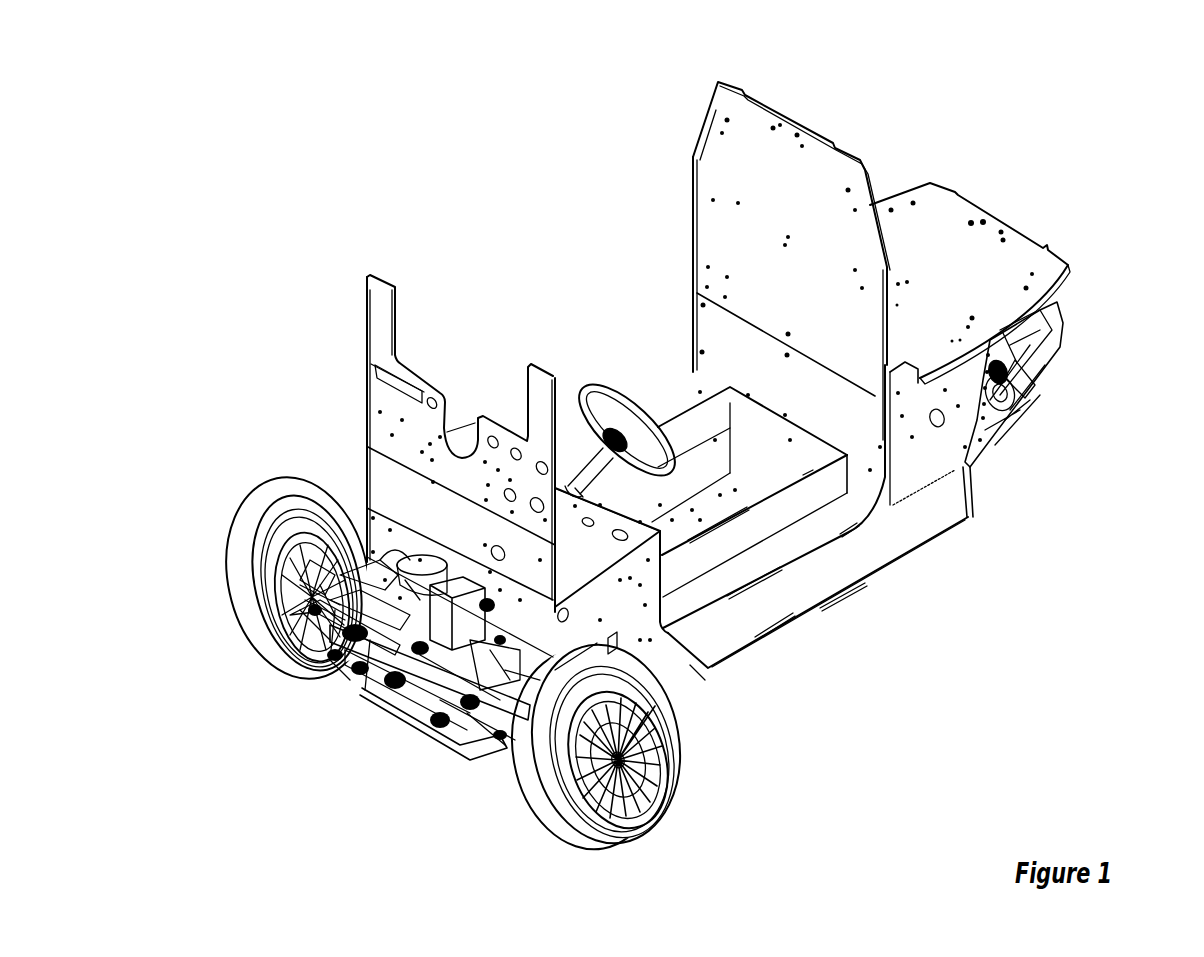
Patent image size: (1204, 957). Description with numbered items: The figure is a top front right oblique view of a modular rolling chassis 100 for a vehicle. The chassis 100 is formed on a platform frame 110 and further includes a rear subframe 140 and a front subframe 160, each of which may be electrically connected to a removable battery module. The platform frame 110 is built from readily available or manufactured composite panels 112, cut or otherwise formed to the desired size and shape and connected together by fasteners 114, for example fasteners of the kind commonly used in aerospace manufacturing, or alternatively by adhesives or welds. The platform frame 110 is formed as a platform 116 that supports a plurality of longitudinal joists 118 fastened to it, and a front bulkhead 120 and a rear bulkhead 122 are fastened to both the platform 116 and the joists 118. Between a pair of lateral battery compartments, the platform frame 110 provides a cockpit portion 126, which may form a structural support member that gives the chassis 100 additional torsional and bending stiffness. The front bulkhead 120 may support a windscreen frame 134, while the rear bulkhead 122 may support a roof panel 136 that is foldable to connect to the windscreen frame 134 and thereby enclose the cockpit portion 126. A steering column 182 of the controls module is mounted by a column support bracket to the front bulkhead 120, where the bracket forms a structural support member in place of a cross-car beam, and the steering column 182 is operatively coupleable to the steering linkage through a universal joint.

The rolling chassis 100 is at (347, 124).
The platform frame 110 is at (800, 643).
The composite panels 112 is at (797, 205).
The fasteners 114 is at (650, 638).
The platform 116 is at (838, 531).
The longitudinal joists 118 is at (931, 533).
The front bulkhead 120 is at (460, 405).
The rear bulkhead 122 is at (983, 198).
The cockpit portion 126 is at (703, 455).
The windscreen frame 134 is at (355, 283).
The roof panel 136 is at (693, 123).
The rear subframe 140 is at (1050, 390).
The front subframe 160 is at (425, 765).
The steering column 182 is at (568, 433).